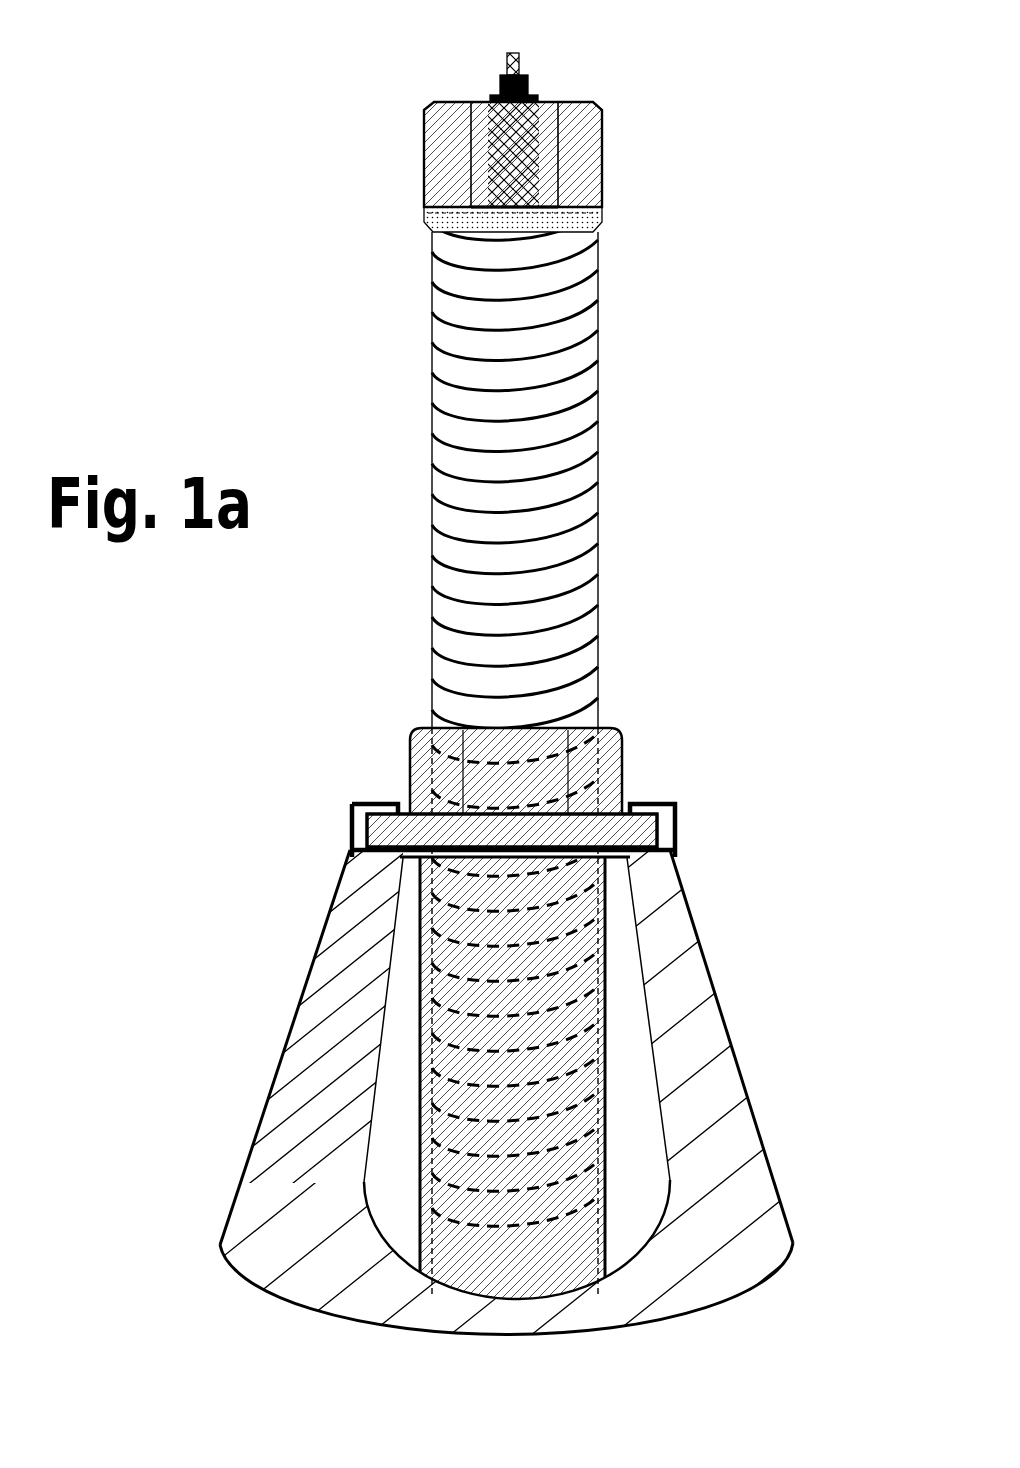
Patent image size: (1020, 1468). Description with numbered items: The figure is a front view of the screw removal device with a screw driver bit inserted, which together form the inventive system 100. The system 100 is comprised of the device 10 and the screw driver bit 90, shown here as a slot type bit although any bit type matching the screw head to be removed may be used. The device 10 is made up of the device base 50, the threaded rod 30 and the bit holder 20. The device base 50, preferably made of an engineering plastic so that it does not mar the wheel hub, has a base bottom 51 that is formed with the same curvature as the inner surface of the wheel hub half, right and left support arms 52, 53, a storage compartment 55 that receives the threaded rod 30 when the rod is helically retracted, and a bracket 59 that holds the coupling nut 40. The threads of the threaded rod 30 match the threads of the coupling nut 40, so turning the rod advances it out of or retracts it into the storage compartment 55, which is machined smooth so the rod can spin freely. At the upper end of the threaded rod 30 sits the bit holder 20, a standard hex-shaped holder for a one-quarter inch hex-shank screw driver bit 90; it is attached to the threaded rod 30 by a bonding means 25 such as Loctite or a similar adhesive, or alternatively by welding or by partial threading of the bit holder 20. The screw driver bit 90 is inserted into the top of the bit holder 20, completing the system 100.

The inventive system 100 is at (150, 76).
The device 10 is at (254, 174).
The bit holder 20 is at (604, 187).
The bonding means 25 is at (410, 226).
The threaded rod 30 is at (432, 455).
The coupling nut 40 is at (624, 772).
The device base 50 is at (178, 746).
The base bottom 51 is at (302, 1339).
The right support arm 52 is at (722, 1005).
The left support arm 53 is at (300, 1006).
The storage compartment 55 is at (420, 1173).
The bracket 59 is at (354, 779).
The screw driver bit 90 is at (548, 73).